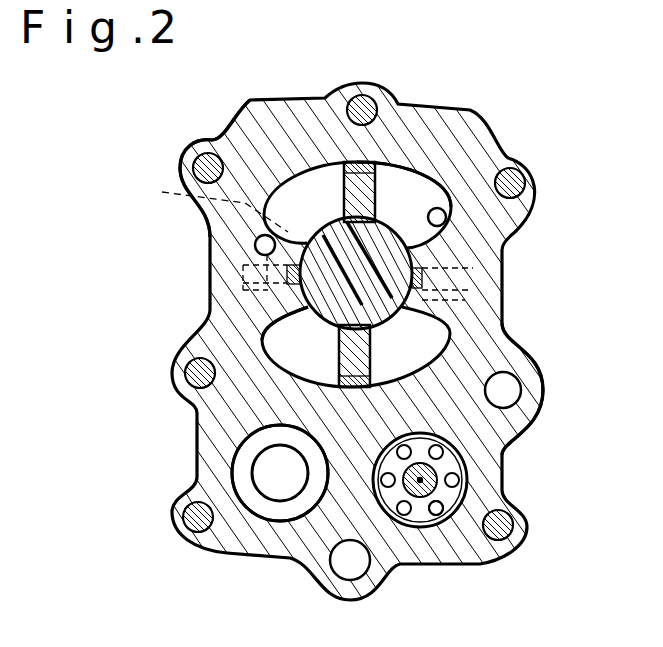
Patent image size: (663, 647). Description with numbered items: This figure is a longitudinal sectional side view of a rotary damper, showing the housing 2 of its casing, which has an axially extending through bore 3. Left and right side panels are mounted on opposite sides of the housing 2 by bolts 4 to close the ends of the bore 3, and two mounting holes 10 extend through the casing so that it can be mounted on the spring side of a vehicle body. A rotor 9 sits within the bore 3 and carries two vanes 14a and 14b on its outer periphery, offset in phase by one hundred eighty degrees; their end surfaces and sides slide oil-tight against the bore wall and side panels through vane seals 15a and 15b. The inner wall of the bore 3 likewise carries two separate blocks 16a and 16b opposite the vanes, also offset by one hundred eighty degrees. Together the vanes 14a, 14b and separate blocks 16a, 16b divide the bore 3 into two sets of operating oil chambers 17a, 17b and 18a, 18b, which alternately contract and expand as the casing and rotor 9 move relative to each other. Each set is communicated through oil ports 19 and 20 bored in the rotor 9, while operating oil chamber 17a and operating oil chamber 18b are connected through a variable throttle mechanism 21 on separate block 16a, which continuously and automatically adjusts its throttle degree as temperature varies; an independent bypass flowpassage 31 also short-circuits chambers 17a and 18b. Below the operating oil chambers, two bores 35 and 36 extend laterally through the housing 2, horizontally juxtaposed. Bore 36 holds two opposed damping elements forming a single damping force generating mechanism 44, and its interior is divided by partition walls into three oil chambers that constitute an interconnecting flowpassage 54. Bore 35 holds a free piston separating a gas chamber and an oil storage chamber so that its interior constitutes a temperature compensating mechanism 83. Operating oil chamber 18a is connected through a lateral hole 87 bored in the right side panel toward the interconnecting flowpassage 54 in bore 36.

The housing 2 is at (220, 440).
The bore 3 is at (420, 178).
The bolt 4 is at (200, 155).
The rotor 9 is at (447, 330).
The mounting hole 10 is at (520, 398).
The vane 14a is at (298, 114).
The vane 14b is at (338, 366).
The vane seal 15a is at (346, 158).
The vane seal 15b is at (485, 278).
The separate block 16a is at (268, 290).
The separate block 16b is at (470, 312).
The operating oil chamber 17a is at (228, 143).
The operating oil chamber 17b is at (507, 336).
The operating oil chamber 18a is at (396, 175).
The operating oil chamber 18b is at (262, 325).
The oil port 19 is at (337, 237).
The oil port 20 is at (367, 228).
The variable throttle mechanism 21 is at (255, 245).
The bypass flowpassage 31 is at (210, 205).
The bore 35 is at (280, 522).
The bore 36 is at (410, 526).
The damping force generating mechanism 44 is at (438, 527).
The interconnecting flowpassage 54 is at (467, 471).
The temperature compensating mechanism 83 is at (252, 510).
The lateral hole 87 is at (447, 216).